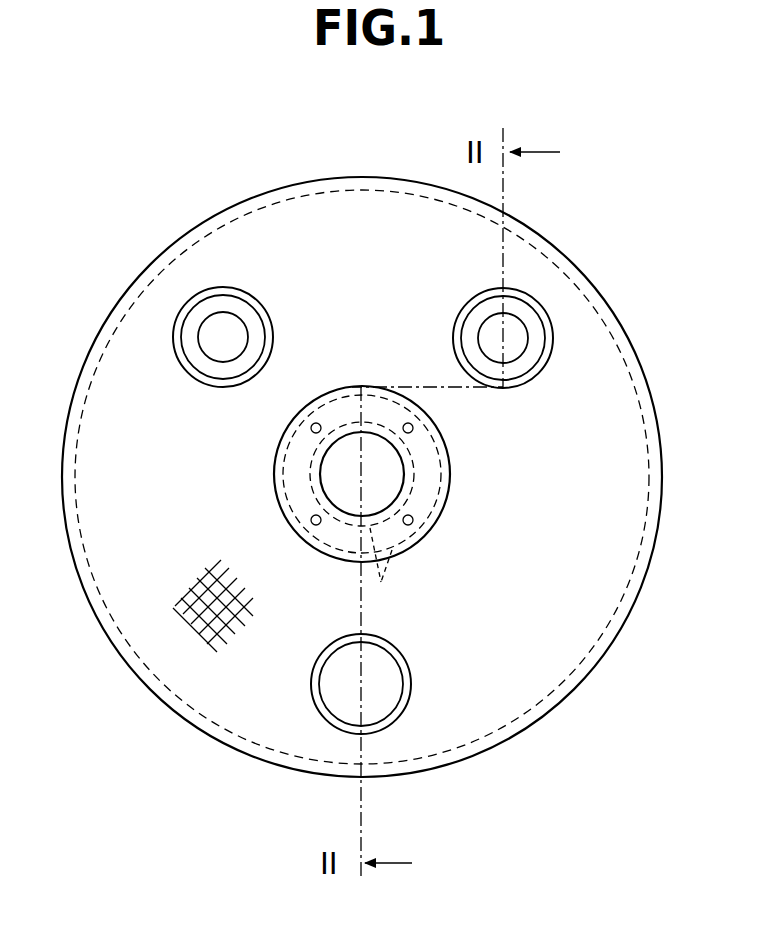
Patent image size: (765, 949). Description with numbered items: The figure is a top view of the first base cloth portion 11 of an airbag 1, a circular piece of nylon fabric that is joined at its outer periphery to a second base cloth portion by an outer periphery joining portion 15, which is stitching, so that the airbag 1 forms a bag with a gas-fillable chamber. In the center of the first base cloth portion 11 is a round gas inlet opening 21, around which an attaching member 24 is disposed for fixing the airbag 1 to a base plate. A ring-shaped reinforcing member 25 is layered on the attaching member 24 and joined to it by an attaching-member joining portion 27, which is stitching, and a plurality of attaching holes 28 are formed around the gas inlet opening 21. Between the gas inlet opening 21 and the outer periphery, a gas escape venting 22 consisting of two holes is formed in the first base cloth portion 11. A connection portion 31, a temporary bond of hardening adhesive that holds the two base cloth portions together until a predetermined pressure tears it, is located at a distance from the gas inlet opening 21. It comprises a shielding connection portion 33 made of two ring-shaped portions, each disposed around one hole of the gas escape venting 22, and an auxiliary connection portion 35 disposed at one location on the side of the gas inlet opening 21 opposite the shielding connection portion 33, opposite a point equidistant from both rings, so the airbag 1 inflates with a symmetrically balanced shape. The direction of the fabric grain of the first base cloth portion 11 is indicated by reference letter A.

The airbag 1 is at (593, 238).
The first base cloth portion 11 is at (563, 640).
The outer periphery joining portion 15 is at (640, 400).
The gas inlet opening 21 is at (406, 474).
The gas escape venting 22 is at (223, 320).
The attaching member 24 is at (422, 512).
The reinforcing member 25 is at (447, 493).
The attaching-member joining portion 27 is at (380, 576).
The attaching holes 28 is at (310, 427).
The connection portion 31 is at (170, 347).
The shielding connection portion 33 is at (176, 314).
The auxiliary connection portion 35 is at (397, 710).
The grain direction A is at (197, 614).